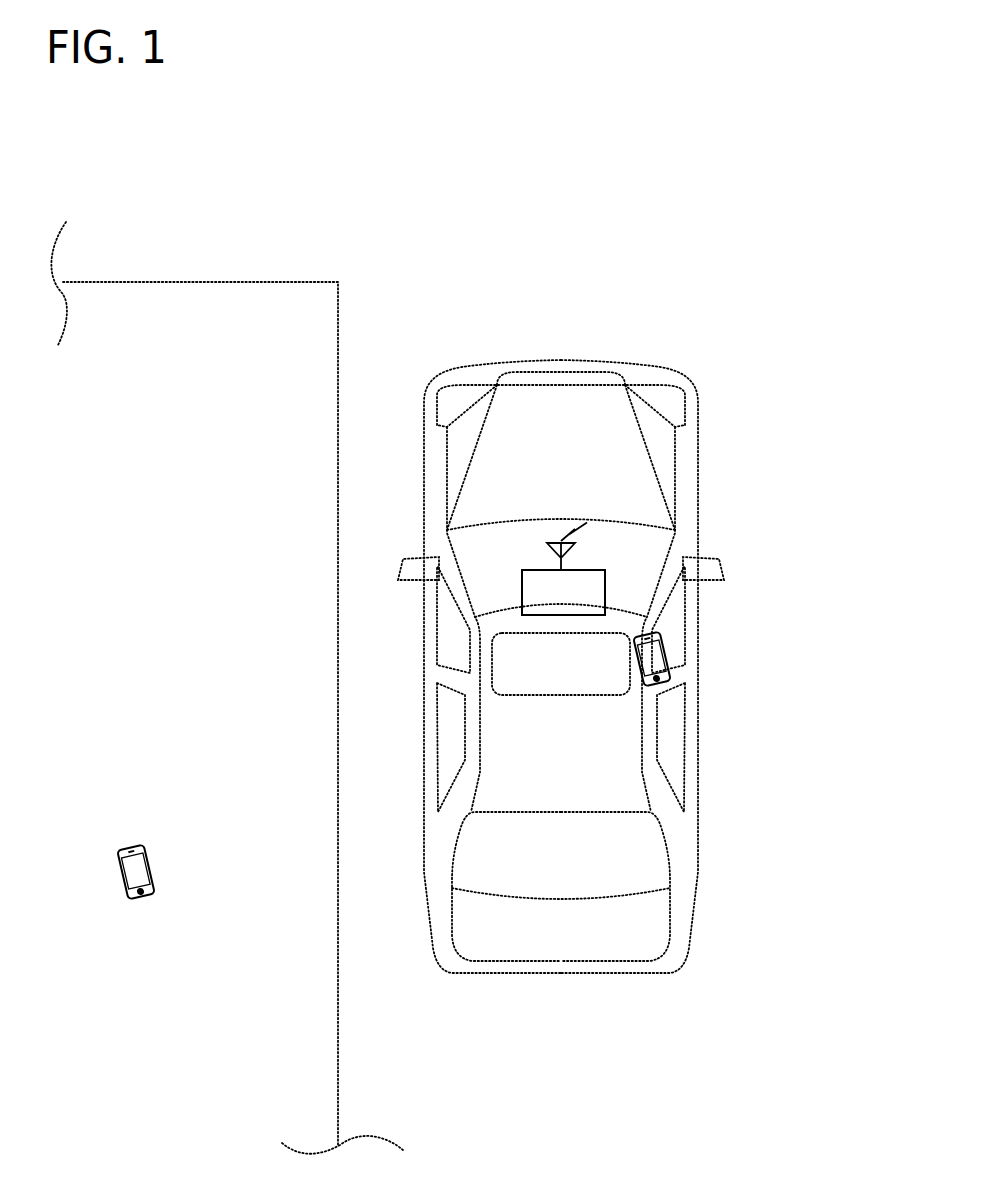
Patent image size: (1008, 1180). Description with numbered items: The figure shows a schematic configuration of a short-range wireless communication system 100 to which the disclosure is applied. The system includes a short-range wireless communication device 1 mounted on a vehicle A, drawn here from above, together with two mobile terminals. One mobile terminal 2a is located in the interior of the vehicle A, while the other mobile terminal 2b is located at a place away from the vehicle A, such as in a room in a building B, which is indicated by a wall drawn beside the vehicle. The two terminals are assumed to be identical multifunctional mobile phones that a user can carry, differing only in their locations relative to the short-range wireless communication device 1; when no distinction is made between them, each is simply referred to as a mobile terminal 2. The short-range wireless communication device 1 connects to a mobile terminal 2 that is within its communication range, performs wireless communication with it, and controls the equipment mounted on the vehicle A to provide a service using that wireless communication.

The short-range wireless communication device 1 is at (583, 570).
The mobile terminal 2 is at (460, 754).
The mobile terminal 2a is at (670, 653).
The mobile terminal 2b is at (147, 857).
The short-range wireless communication system 100 is at (776, 249).
The vehicle A is at (650, 367).
The building B is at (303, 282).